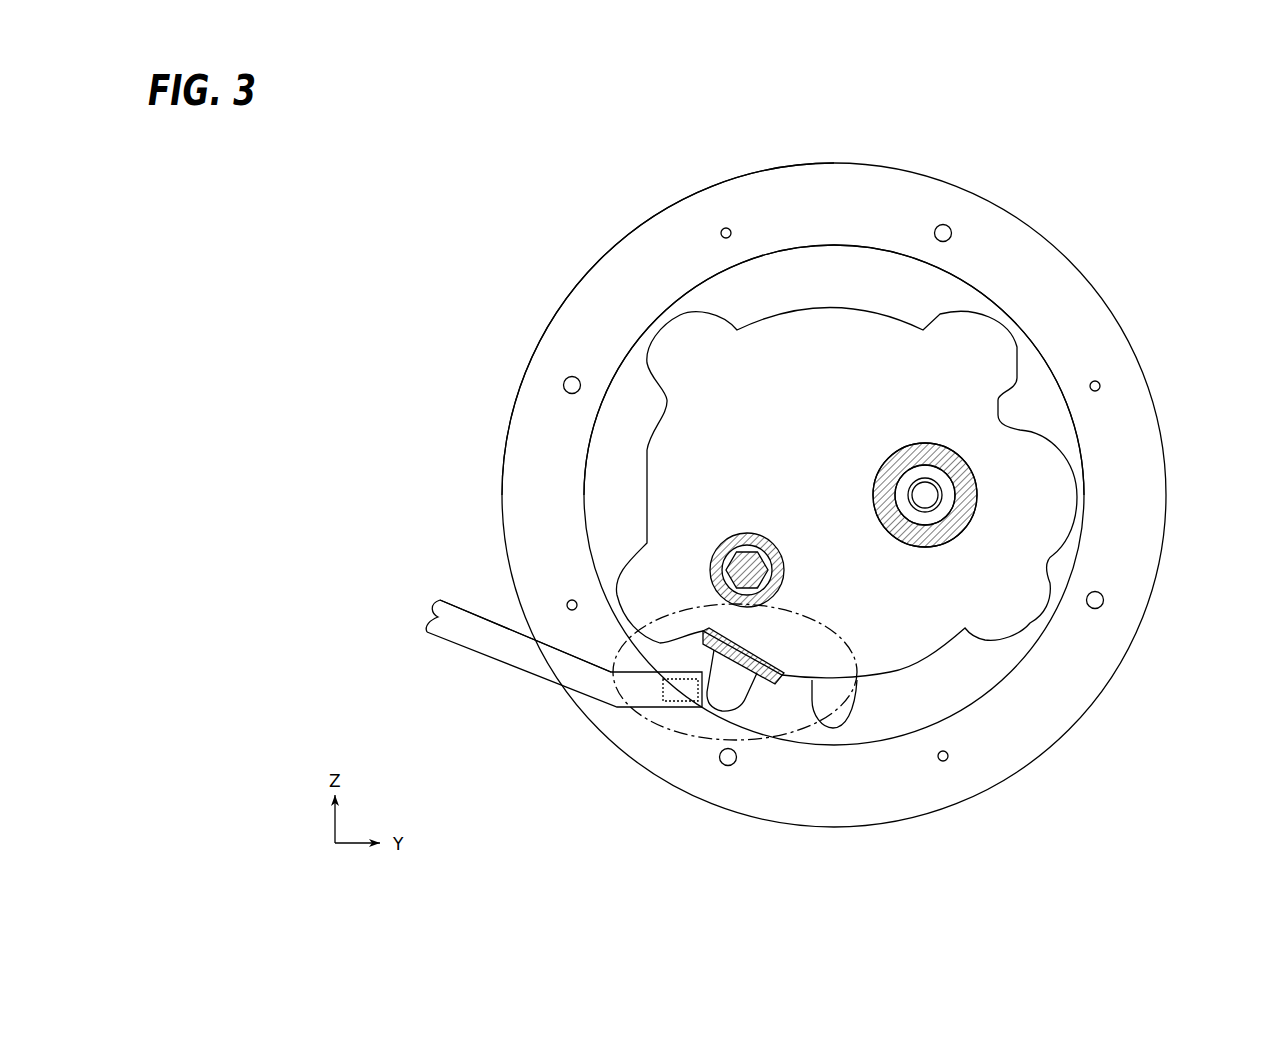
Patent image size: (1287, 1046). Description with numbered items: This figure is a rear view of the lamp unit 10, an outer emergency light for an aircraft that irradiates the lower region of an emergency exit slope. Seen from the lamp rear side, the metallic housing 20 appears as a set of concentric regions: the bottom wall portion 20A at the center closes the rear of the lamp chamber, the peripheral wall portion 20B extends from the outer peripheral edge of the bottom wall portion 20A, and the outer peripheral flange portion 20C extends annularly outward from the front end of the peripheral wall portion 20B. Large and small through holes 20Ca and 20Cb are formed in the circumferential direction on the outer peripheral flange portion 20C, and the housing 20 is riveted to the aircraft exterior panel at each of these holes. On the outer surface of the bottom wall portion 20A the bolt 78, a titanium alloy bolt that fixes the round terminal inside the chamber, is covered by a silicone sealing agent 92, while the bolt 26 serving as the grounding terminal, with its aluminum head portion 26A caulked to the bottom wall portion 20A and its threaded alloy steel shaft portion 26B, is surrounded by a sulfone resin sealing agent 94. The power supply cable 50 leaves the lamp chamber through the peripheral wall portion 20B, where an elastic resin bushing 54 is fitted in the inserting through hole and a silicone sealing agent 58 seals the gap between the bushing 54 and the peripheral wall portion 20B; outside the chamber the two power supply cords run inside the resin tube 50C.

The lamp unit 10 is at (528, 256).
The housing 20 is at (1104, 292).
The bottom wall portion 20A is at (827, 332).
The peripheral wall portion 20B is at (643, 463).
The outer peripheral flange portion 20C is at (530, 538).
The large through holes 20Ca is at (948, 226).
The small through holes 20Cb is at (721, 228).
The bolt 26 is at (893, 478).
The head portion 26A is at (947, 483).
The shaft portion 26B is at (927, 490).
The power supply cable 50 is at (544, 687).
The resin tube 50C is at (492, 652).
The bushing 54 is at (744, 711).
The sealing agent 58 is at (777, 681).
The bolt 78 is at (752, 548).
The sealing agent 92 is at (788, 578).
The sealing agent 94 is at (960, 528).